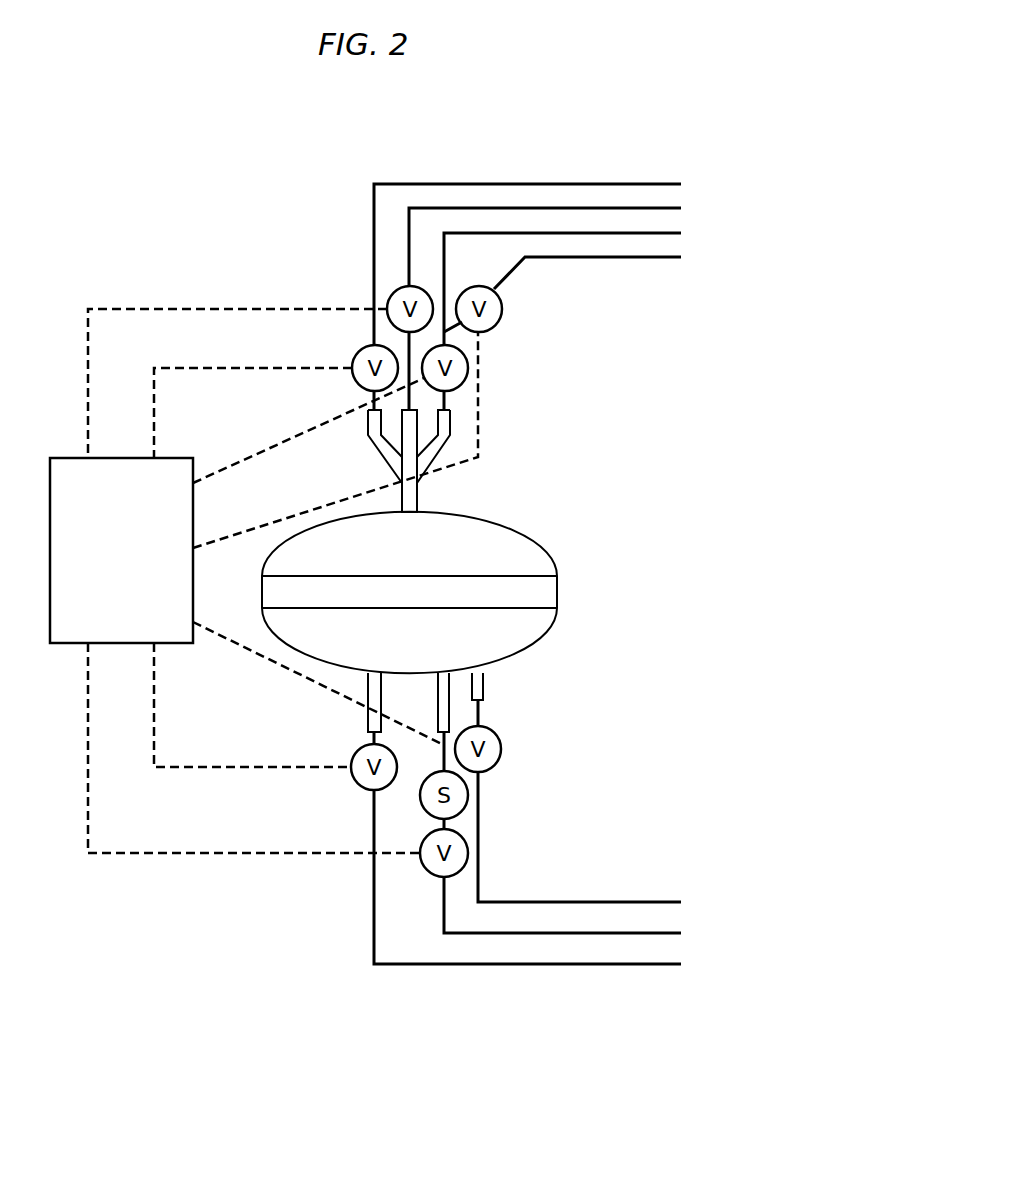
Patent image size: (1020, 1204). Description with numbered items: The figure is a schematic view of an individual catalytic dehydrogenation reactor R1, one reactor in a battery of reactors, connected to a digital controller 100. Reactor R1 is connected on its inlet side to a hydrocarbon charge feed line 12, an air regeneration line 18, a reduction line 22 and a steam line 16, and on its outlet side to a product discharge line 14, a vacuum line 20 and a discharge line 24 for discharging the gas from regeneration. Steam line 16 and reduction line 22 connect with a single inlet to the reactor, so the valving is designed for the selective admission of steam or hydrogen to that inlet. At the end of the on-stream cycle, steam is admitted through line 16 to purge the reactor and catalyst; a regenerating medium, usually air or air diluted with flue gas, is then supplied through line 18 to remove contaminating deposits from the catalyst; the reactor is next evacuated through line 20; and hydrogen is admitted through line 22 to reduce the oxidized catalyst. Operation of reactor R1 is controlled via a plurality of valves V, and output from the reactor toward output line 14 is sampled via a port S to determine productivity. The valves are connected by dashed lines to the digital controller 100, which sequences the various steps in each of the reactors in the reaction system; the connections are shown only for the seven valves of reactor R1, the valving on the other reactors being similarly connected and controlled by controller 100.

The hydrocarbon charge feed line 12 is at (636, 184).
The air regeneration line 18 is at (666, 206).
The reduction line 22 is at (666, 238).
The steam line 16 is at (630, 260).
The catalytic dehydrogenation reactor R1 is at (485, 526).
The digital controller 100 is at (121, 550).
The vacuum line 20 is at (618, 902).
The product discharge line 14 is at (642, 936).
The discharge line 24 is at (419, 966).